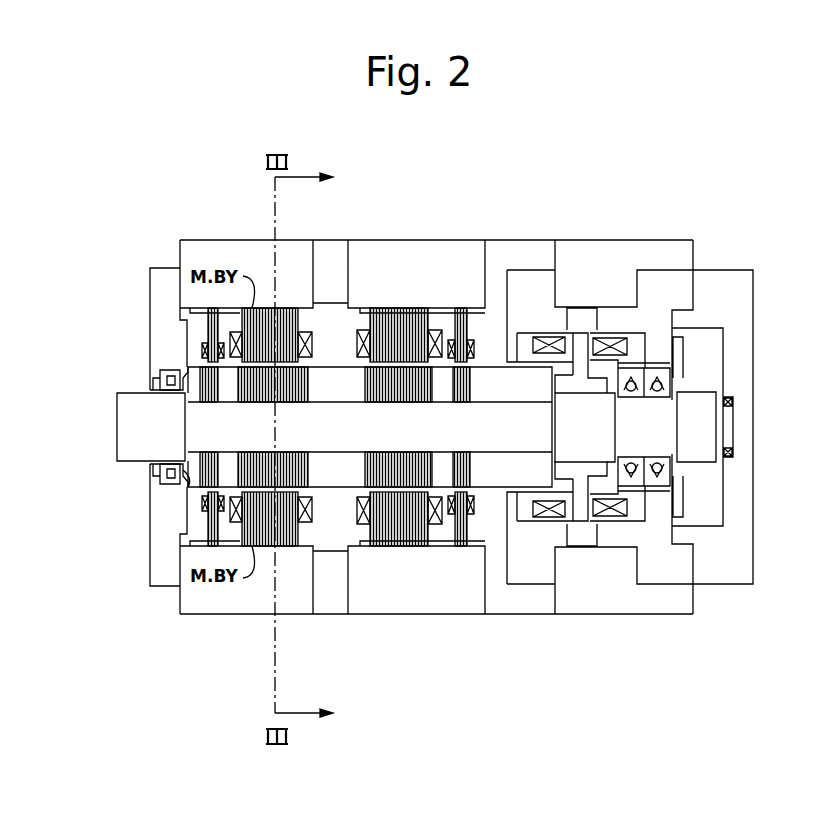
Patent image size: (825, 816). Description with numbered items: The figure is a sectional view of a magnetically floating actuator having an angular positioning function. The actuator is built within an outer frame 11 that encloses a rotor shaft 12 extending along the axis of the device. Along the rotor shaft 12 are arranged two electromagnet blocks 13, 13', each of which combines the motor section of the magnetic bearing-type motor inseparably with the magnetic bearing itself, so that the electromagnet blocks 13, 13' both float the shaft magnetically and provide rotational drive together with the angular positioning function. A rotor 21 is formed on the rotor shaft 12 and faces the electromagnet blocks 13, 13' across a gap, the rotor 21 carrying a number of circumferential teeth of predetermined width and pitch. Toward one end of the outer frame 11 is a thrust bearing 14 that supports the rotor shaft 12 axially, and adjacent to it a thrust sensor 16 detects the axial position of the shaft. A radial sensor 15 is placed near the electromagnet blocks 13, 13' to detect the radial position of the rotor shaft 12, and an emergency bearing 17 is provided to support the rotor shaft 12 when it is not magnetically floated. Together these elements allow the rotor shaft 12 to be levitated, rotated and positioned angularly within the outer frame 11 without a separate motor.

The outer frame 11 is at (742, 308).
The rotor shaft 12 is at (115, 424).
The electromagnet block 13 is at (257, 364).
The electromagnet block 13' is at (415, 364).
The thrust bearing 14 is at (606, 252).
The radial sensor 15 is at (203, 343).
The thrust sensor 16 is at (728, 426).
The emergency bearing 17 is at (165, 375).
The rotor 21 is at (188, 489).